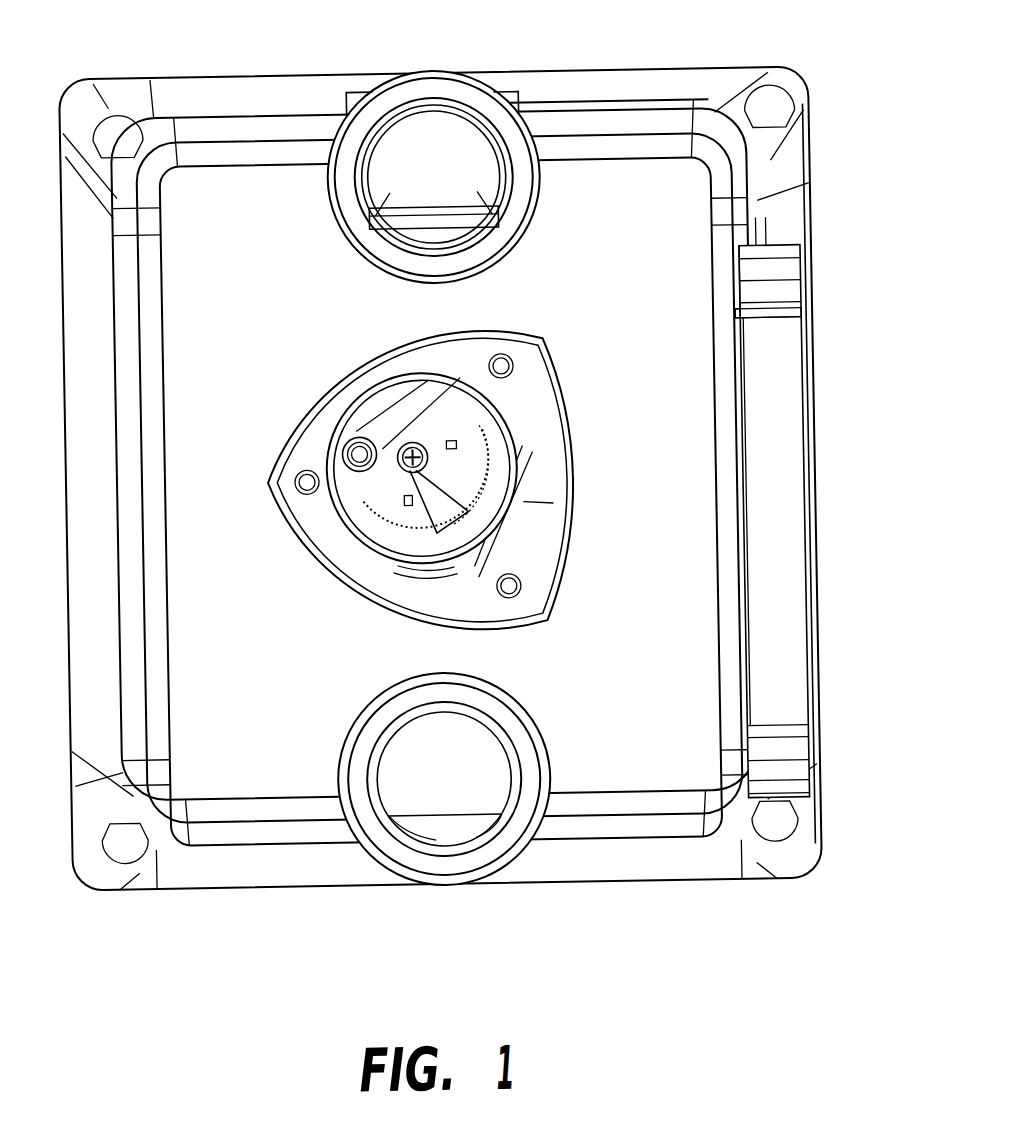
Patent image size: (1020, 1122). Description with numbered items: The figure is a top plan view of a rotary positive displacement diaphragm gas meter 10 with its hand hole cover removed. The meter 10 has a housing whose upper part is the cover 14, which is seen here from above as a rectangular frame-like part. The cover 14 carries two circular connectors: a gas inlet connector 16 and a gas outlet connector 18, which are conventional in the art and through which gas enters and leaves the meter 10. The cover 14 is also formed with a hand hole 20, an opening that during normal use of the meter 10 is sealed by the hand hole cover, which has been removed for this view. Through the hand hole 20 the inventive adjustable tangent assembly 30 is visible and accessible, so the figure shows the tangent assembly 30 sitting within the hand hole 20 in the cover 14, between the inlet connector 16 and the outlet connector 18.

The rotary positive displacement diaphragm meter 10 is at (838, 462).
The cover 14 is at (764, 649).
The gas inlet connector 16 is at (481, 833).
The gas outlet connector 18 is at (475, 120).
The hand hole 20 is at (550, 524).
The tangent assembly 30 is at (474, 413).